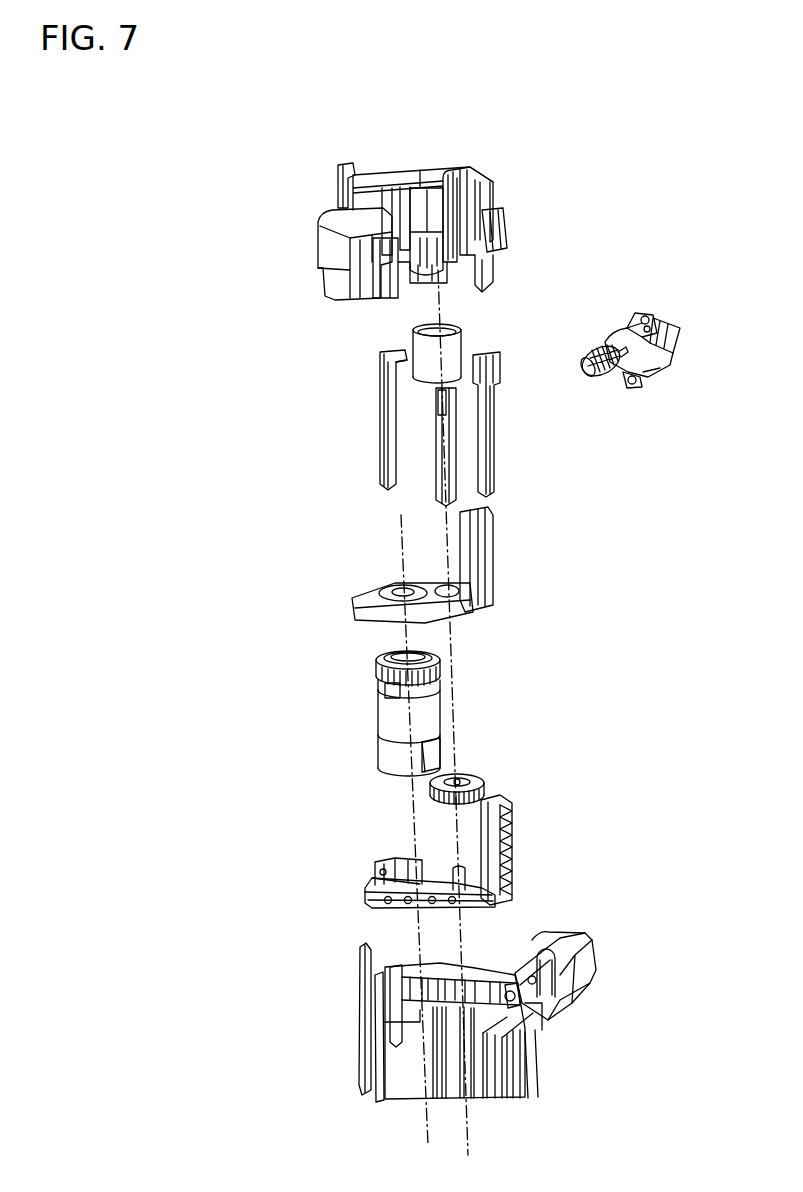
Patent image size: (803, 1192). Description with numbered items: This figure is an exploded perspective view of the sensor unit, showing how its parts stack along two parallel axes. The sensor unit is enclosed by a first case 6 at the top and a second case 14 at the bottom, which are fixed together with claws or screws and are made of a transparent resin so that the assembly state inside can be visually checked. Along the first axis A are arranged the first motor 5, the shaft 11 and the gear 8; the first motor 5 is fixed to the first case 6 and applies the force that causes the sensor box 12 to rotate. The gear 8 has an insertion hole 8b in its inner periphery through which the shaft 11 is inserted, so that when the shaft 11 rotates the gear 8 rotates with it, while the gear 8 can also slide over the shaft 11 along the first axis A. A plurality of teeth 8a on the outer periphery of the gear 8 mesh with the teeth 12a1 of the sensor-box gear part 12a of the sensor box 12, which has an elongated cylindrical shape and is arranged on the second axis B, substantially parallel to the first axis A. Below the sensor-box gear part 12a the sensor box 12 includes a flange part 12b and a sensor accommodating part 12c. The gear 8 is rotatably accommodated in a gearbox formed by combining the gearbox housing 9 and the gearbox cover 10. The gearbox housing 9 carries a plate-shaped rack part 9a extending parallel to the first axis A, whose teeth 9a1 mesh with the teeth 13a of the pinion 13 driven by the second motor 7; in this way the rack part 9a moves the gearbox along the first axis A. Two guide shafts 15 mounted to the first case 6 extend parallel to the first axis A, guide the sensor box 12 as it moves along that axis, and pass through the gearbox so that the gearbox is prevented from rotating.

The first motor 5 is at (450, 352).
The first case 6 is at (340, 263).
The second motor 7 is at (655, 373).
The gear 8 is at (512, 739).
The teeth 8a is at (490, 786).
The insertion hole 8b is at (462, 775).
The gearbox housing 9 is at (447, 855).
The rack part 9a is at (508, 838).
The teeth 9a1 is at (508, 881).
The gearbox cover 10 is at (495, 540).
The shaft 11 is at (435, 485).
The sensor box 12 is at (340, 683).
The sensor-box gear part 12a is at (378, 668).
The teeth 12a1 is at (383, 662).
The flange part 12b is at (375, 678).
The sensor accommodating part 12c is at (393, 718).
The pinion 13 is at (592, 352).
The teeth 13a is at (608, 346).
The second case 14 is at (517, 1067).
The guide shafts 15 is at (380, 455).
The first axis A is at (468, 1128).
The second axis B is at (425, 1137).